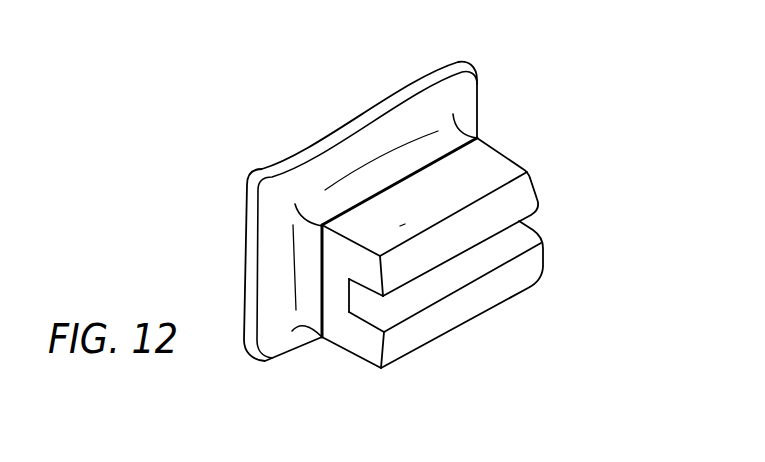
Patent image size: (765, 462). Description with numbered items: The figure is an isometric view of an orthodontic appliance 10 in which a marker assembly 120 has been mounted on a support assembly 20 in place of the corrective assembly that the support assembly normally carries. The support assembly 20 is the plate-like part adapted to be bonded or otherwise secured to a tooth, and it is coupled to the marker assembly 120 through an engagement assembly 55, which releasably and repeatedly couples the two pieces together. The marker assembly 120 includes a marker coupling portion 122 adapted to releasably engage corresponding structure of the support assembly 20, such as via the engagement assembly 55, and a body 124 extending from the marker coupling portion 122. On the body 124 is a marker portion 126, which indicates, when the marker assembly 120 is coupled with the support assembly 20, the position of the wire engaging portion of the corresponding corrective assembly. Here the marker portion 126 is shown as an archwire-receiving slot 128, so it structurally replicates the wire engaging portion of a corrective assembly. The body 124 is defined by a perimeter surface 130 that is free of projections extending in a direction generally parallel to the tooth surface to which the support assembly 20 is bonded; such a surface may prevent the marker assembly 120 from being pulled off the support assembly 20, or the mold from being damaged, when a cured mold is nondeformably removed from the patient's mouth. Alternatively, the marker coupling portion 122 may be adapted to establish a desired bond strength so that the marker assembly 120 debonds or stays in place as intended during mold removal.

The orthodontic appliance 10 is at (380, 73).
The support assembly 20 is at (240, 258).
The engagement assembly 55 is at (313, 262).
The marker assembly 120 is at (532, 305).
The marker coupling portion 122 is at (493, 133).
The body 124 is at (538, 148).
The marker portion 126 is at (547, 223).
The archwire-receiving slot 128 is at (507, 247).
The perimeter surface 130 is at (388, 232).